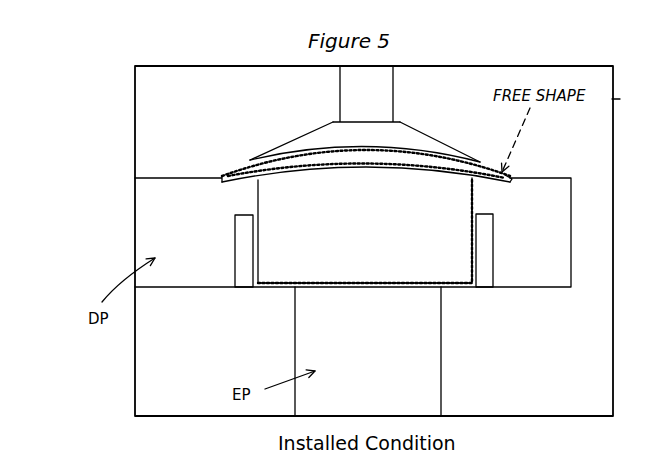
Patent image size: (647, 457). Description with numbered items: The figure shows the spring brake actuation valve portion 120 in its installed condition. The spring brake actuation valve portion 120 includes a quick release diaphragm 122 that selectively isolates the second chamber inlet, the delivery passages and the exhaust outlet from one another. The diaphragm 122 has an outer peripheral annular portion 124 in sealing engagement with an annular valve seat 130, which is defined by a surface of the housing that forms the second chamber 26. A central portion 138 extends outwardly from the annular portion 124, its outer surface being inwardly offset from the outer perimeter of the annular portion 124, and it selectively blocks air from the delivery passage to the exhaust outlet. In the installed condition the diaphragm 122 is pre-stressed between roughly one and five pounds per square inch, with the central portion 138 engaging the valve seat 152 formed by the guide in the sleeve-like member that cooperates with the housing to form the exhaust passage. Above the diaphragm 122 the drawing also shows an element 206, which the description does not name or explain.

The second chamber 26 is at (320, 137).
The outer peripheral annular portion 124 is at (255, 162).
The punch 206 is at (393, 94).
The annular valve seat 130 is at (508, 177).
The central portion 138 is at (458, 207).
The spring brake actuation valve portion 120 is at (202, 202).
The quick release diaphragm 122 is at (246, 200).
The valve seat 152 is at (272, 283).